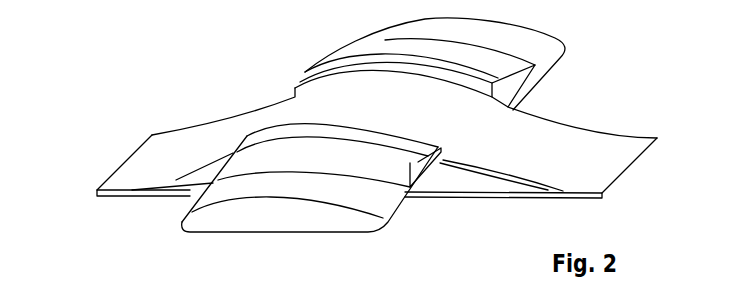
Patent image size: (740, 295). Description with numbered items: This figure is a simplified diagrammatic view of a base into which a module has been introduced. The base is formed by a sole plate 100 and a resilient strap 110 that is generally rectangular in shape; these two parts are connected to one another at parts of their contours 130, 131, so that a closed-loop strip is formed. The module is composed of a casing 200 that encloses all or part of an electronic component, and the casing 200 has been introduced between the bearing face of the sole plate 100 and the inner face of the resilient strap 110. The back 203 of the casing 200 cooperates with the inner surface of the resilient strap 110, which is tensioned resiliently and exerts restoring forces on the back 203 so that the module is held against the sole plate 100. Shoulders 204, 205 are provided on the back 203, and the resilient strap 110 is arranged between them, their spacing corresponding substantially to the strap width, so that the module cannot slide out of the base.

The sole plate 100 is at (180, 194).
The resilient strap 110 is at (255, 110).
The contour 130 is at (123, 162).
The contour 131 is at (618, 172).
The casing 200 is at (287, 213).
The back 203 is at (478, 32).
The shoulder 204 is at (422, 162).
The shoulder 205 is at (500, 78).